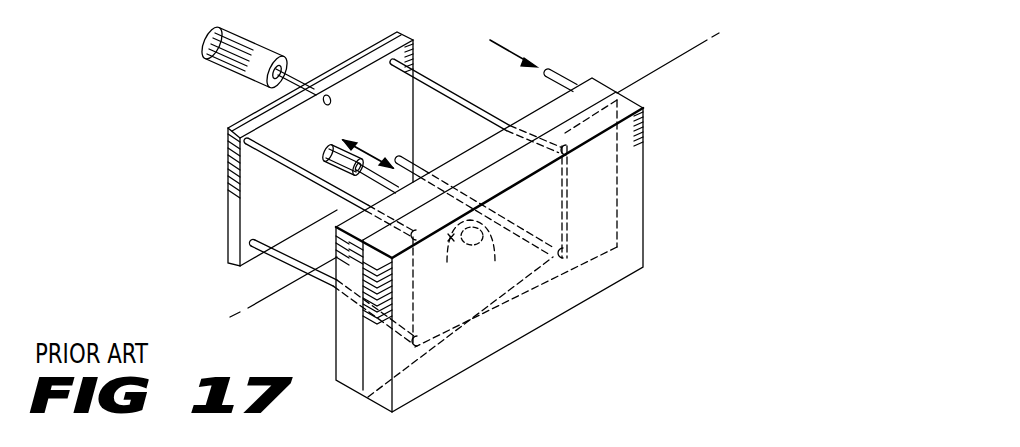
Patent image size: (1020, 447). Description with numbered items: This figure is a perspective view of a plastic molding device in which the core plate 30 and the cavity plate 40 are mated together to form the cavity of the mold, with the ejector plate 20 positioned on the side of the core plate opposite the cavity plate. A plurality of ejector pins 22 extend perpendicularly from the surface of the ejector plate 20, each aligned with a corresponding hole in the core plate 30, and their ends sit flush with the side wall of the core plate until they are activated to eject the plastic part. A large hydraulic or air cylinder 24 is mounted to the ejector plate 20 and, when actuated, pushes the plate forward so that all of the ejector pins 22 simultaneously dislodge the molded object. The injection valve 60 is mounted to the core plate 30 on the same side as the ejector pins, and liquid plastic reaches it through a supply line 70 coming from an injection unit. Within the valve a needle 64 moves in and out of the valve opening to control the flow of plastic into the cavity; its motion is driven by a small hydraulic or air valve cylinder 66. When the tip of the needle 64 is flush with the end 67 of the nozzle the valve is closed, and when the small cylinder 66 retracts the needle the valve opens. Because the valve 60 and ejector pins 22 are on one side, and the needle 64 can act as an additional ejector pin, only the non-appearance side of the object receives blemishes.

The ejector plate 20 is at (230, 170).
The ejector pins 22 is at (437, 92).
The large hydraulic or air cylinder 24 is at (263, 56).
The core plate 30 is at (600, 82).
The cavity plate 40 is at (637, 103).
The valve 60 is at (467, 250).
The needle 64 is at (400, 156).
The small hydraulic or air valve cylinder 66 is at (327, 146).
The end of the nozzle 67 is at (487, 250).
The supply line 70 is at (561, 78).